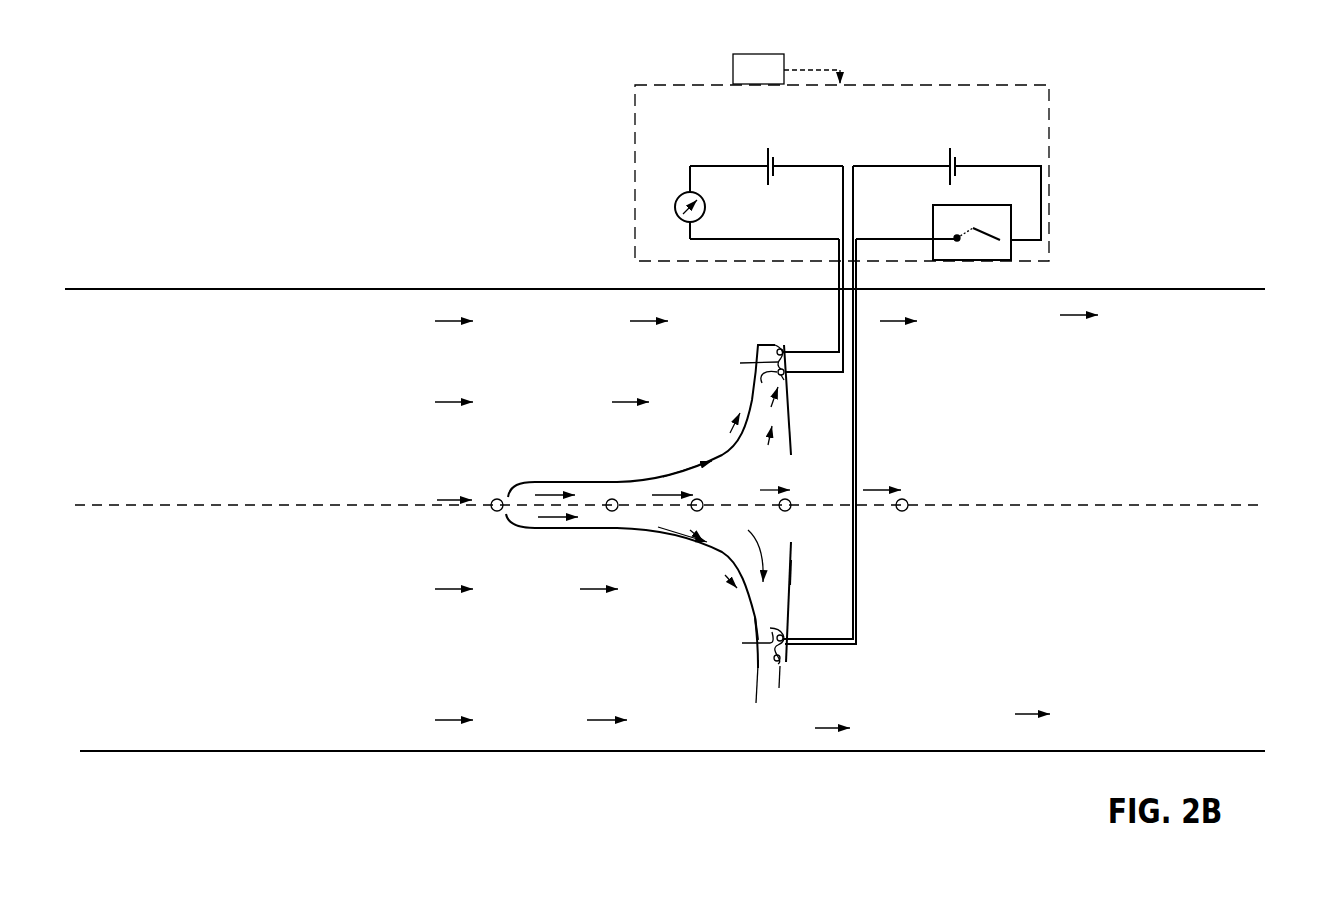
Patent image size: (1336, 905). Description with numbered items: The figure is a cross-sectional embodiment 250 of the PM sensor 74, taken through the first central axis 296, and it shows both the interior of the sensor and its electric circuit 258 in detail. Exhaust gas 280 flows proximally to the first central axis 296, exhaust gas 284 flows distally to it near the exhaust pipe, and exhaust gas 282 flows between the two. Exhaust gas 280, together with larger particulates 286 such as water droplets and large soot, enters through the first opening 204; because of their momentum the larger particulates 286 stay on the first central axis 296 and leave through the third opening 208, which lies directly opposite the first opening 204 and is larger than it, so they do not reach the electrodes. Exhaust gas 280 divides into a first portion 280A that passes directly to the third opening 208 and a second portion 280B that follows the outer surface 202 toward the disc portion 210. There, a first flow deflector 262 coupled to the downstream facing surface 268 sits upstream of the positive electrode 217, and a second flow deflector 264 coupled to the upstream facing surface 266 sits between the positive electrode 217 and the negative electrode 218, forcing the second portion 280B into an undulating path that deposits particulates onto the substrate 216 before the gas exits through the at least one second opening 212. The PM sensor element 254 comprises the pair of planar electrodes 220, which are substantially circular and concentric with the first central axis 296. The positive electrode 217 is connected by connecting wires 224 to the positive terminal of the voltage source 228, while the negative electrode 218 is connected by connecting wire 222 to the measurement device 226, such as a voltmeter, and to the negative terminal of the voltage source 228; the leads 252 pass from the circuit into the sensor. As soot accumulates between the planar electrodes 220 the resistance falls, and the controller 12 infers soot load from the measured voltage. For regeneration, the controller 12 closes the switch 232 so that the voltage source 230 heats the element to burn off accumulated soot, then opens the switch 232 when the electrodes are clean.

The controller 12 is at (786, 69).
The PM sensor 74 is at (517, 242).
The outer surface 202 is at (610, 478).
The first opening 204 is at (507, 517).
The third opening 208 is at (792, 540).
The disc portion 210 is at (755, 662).
The second opening 212 is at (757, 694).
The substrate 216 is at (788, 373).
The positive electrode 217 is at (785, 637).
The negative electrode 218 is at (790, 345).
The planar electrodes 220 is at (755, 410).
The connecting wire 222 is at (812, 238).
The connecting wires 224 is at (838, 165).
The measurement device 226 is at (677, 200).
The voltage source 228 is at (765, 150).
The voltage source 230 is at (945, 155).
The switch 232 is at (928, 215).
The cross-sectional embodiment 250 is at (1218, 70).
The electrical leads 252 is at (832, 260).
The PM sensor element 254 is at (786, 342).
The electric circuit 258 is at (633, 84).
The first flow deflector 262 is at (775, 628).
The second flow deflector 264 is at (744, 639).
The upstream facing surface 266 is at (757, 617).
The downstream facing surface 268 is at (791, 572).
The exhaust gas 280 is at (460, 500).
The first portion 280A is at (697, 498).
The second portion 280B is at (693, 533).
The exhaust gas 282 is at (452, 402).
The exhaust gas 284 is at (452, 321).
The larger particulates 286 is at (492, 511).
The first central axis 296 is at (1185, 505).